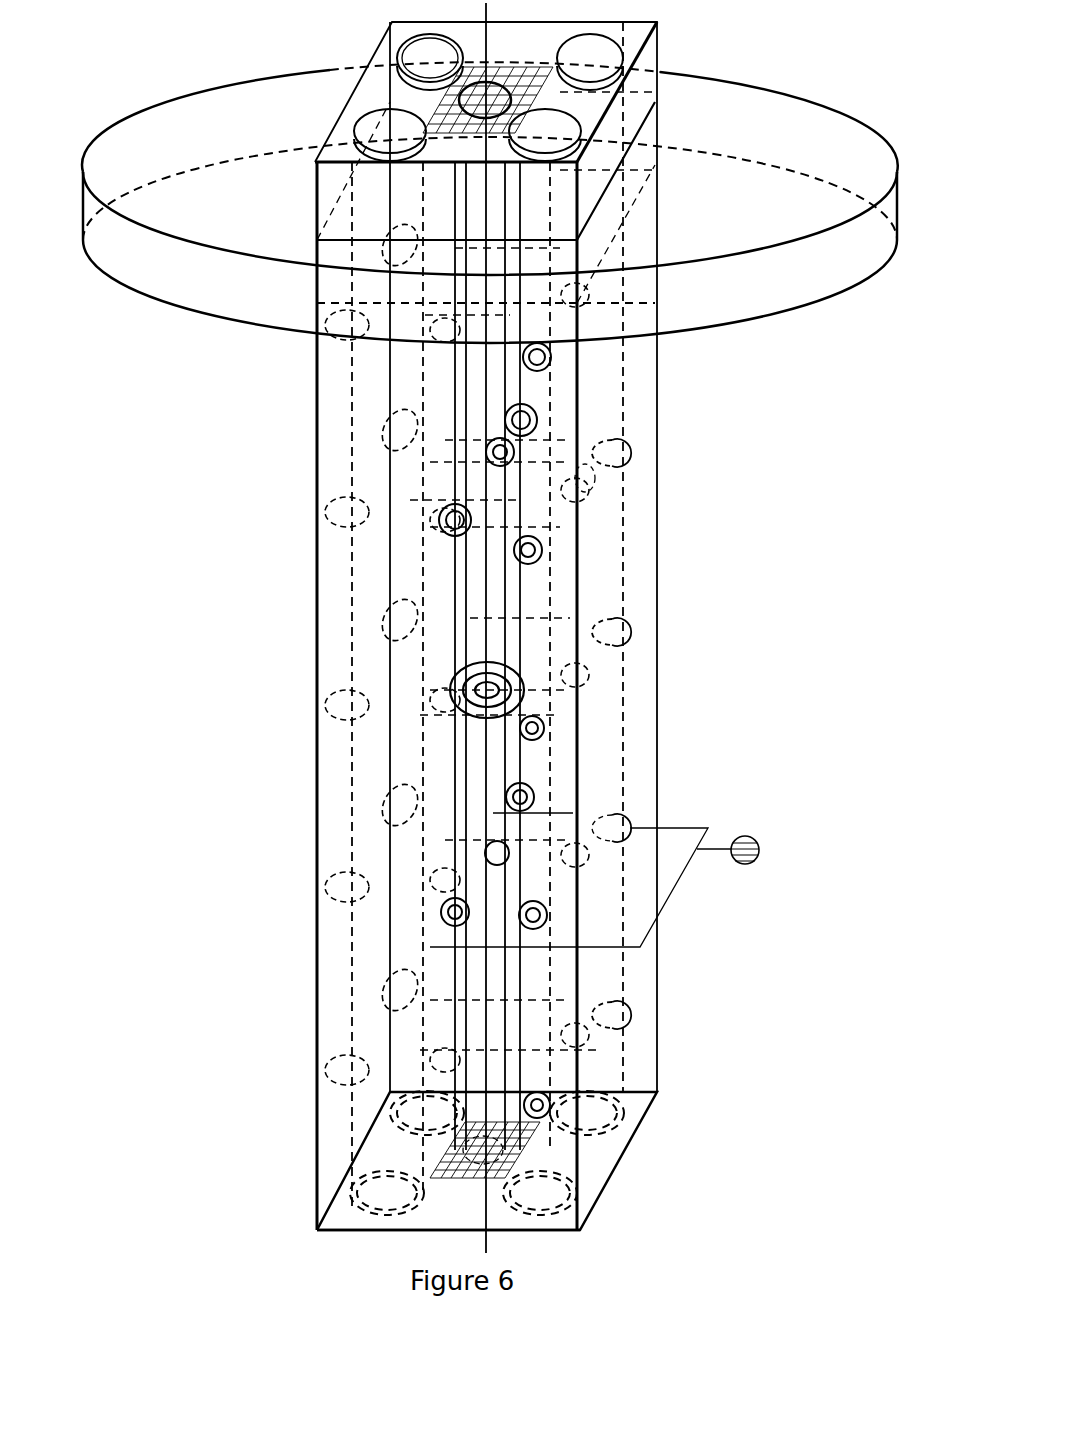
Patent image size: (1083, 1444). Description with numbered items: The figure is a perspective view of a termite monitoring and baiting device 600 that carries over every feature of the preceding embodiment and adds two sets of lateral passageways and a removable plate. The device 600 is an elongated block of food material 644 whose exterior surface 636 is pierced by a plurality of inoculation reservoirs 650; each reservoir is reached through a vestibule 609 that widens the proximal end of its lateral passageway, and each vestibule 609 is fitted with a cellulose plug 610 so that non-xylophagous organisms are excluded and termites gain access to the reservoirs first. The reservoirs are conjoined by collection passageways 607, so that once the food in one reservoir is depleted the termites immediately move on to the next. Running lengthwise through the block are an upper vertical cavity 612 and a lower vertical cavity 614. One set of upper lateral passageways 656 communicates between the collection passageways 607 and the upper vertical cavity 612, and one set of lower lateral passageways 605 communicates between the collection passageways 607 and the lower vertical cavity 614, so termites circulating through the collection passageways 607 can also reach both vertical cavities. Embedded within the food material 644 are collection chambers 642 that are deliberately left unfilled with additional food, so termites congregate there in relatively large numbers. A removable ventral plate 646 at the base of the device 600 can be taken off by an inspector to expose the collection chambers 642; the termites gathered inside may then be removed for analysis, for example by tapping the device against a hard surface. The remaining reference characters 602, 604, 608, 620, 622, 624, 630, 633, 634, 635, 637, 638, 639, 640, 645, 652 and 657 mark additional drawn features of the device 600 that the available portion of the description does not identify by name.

The device 600 is at (866, 28).
The housing 602 is at (657, 520).
The sample ring 604 is at (687, 734).
The lower lateral passageways 605 is at (634, 472).
The collection passageways 607 is at (525, 978).
The top cap 608 is at (568, 82).
The vestibule 609 is at (688, 806).
The cellulose plug 610 is at (747, 865).
The upper vertical cavity 612 is at (652, 387).
The lower vertical cavity 614 is at (373, 753).
The spring 620 is at (555, 722).
The central spring 622 is at (617, 690).
The spring holder 624 is at (351, 622).
The ring assembly 630 is at (291, 687).
The bottom plate 633 is at (569, 1172).
The shelf 634 is at (593, 217).
The shelf edge 635 is at (719, 255).
The exterior surface 636 is at (317, 628).
The disk 637 is at (490, 193).
The slanted ring 638 is at (319, 617).
The disk edge 639 is at (671, 69).
The bottom grid 640 is at (425, 1153).
The collection chambers 642 is at (600, 505).
The food material 644 is at (633, 570).
The cap ring 645 is at (334, 54).
The removable ventral plate 646 is at (396, 1209).
The inoculation reservoirs 650 is at (352, 653).
The spring 652 is at (643, 430).
The upper lateral passageways 656 is at (610, 542).
The tray 657 is at (634, 801).